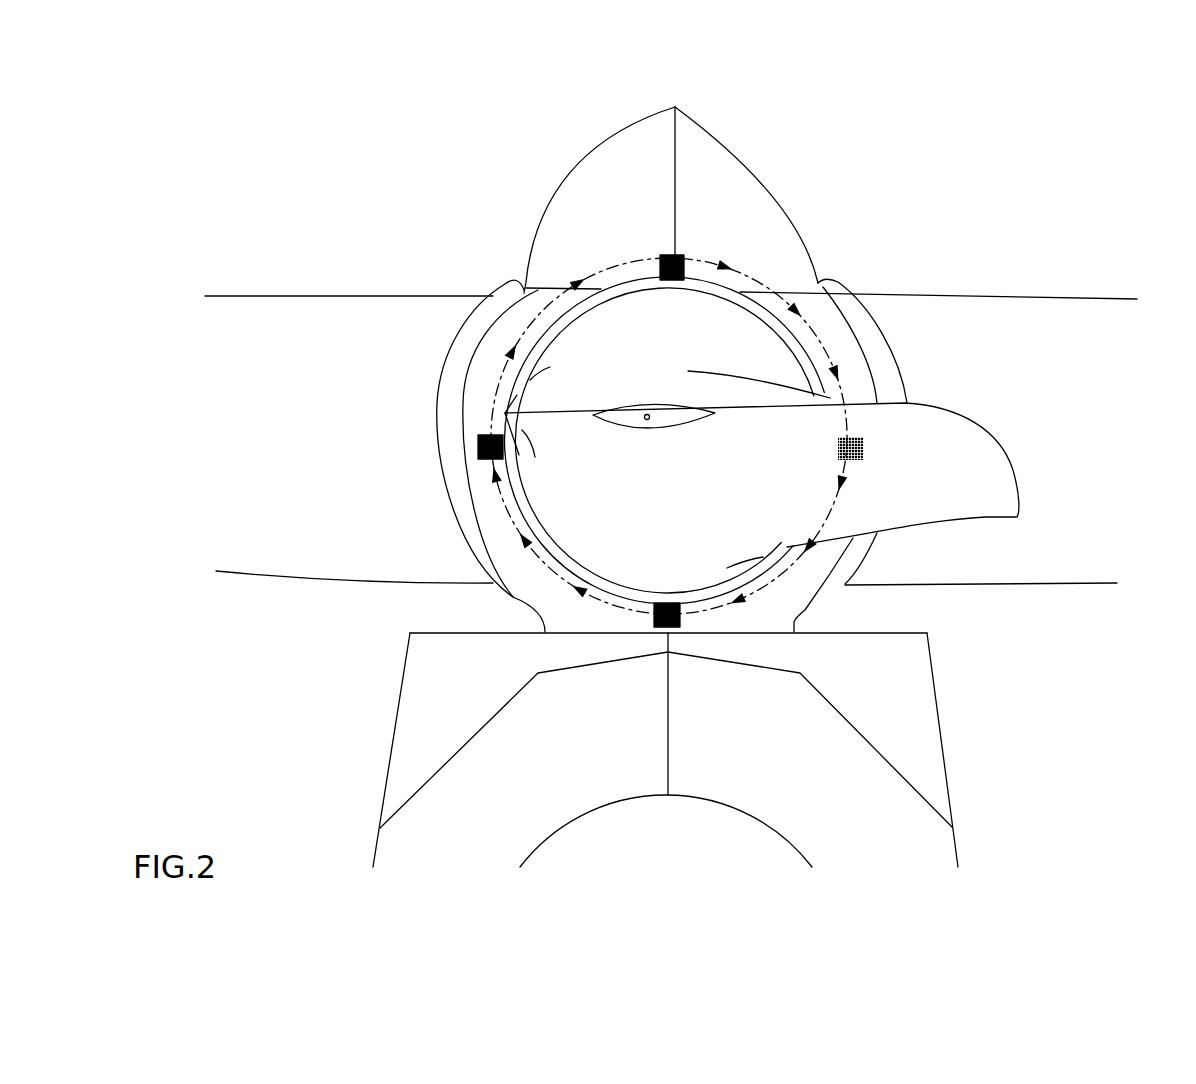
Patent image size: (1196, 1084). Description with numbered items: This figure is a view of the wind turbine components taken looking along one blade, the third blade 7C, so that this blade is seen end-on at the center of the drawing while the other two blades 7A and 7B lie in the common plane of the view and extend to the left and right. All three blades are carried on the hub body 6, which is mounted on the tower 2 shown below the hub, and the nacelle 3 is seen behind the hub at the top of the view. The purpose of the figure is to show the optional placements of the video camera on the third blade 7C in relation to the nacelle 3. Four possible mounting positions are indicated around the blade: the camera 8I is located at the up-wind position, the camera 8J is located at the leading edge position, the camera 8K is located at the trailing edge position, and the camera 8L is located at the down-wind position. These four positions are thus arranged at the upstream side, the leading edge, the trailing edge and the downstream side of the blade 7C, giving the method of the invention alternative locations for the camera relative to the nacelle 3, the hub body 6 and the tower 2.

The tower 2 is at (700, 860).
The nacelle 3 is at (712, 200).
The hub body 6 is at (872, 702).
The blade 7A is at (353, 367).
The blade 7B is at (1113, 368).
The third blade 7C is at (985, 463).
The camera 8I is at (668, 252).
The camera 8J is at (478, 447).
The camera 8K is at (875, 450).
The camera 8L is at (680, 609).